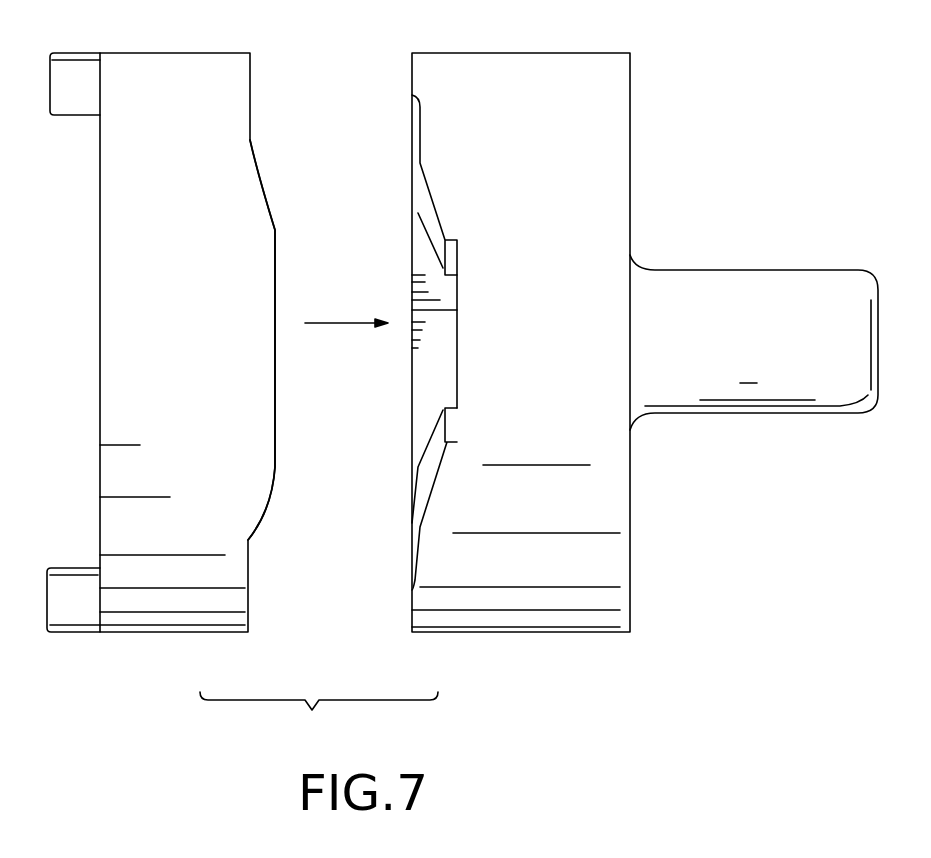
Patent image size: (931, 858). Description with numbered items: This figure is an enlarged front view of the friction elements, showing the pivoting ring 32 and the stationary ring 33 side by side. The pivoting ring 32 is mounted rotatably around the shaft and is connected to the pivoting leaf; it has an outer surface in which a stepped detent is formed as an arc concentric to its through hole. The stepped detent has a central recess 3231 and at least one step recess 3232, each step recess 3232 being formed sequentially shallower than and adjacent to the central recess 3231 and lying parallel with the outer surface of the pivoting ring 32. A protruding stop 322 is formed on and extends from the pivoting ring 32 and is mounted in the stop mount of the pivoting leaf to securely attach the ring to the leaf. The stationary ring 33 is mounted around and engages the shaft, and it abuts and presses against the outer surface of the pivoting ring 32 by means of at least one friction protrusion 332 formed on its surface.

The pivoting ring 32 is at (578, 363).
The protruding stop 322 is at (803, 293).
The central recess 3231 is at (457, 337).
The step recess 3232 is at (420, 128).
The stationary ring 33 is at (208, 368).
The friction protrusion 332 is at (250, 467).